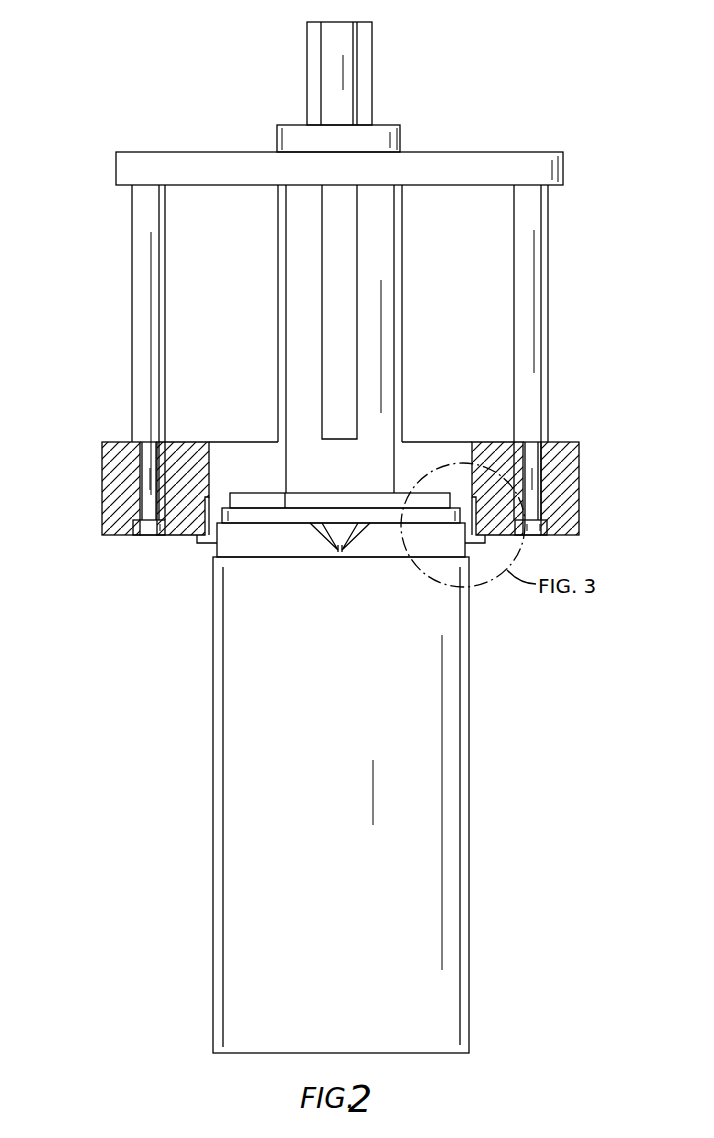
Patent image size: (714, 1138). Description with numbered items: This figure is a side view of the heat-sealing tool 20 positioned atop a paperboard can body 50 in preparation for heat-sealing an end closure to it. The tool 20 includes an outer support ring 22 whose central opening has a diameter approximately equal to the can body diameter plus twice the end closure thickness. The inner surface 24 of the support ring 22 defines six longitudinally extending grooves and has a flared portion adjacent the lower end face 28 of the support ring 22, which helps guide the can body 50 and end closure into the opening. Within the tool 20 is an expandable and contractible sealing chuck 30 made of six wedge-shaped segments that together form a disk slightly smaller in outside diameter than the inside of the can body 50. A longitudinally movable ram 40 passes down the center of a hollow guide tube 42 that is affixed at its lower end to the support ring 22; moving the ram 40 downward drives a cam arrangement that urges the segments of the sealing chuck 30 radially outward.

The heat-sealing tool 20 is at (565, 181).
The outer support ring 22 is at (567, 488).
The inner surface 24 is at (209, 473).
The lower end face 28 is at (117, 537).
The sealing chuck 30 is at (298, 556).
The ram 40 is at (368, 86).
The hollow guide tube 42 is at (398, 329).
The paperboard can body 50 is at (470, 828).